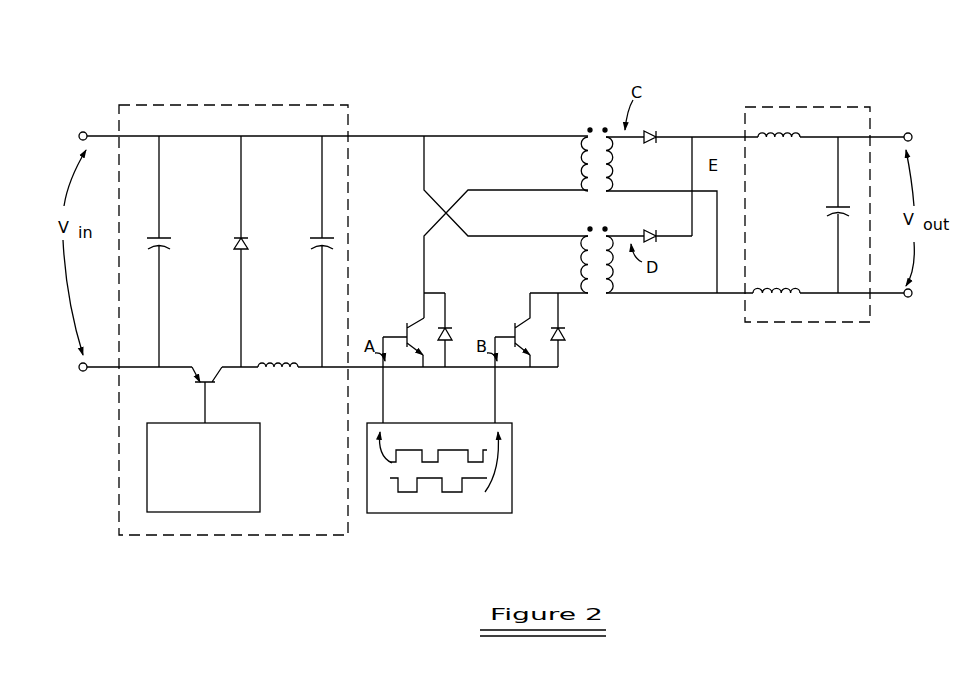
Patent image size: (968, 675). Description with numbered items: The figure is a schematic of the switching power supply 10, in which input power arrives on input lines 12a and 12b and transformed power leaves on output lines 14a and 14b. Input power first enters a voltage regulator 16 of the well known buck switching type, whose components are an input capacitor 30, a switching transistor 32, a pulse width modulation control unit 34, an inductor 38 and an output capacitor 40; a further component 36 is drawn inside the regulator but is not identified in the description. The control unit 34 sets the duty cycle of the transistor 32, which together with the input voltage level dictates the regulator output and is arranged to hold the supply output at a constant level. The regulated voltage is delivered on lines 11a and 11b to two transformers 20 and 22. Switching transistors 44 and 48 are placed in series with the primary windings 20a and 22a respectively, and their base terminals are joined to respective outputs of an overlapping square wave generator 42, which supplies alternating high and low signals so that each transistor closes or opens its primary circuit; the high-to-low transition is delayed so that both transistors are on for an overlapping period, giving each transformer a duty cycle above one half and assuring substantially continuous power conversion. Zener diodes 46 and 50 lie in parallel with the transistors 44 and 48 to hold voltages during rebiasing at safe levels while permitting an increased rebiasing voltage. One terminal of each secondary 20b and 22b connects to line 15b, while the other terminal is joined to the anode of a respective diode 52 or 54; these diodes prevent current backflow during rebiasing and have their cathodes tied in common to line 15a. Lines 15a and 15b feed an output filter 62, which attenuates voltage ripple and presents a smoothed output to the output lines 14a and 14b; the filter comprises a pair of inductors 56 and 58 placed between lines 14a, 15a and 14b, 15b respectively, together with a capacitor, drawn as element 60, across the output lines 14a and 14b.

The switching power supply 10 is at (522, 52).
The output line of voltage regulator 11a is at (378, 133).
The output line of voltage regulator 11b is at (367, 372).
The input line 12a is at (78, 123).
The input line 12b is at (78, 385).
The output line 14a is at (890, 130).
The output line 14b is at (890, 300).
The line 15a is at (732, 130).
The line 15b is at (704, 298).
The voltage regulator 16 is at (201, 104).
The transformer 20 is at (606, 137).
The primary winding 20a is at (561, 164).
The secondary winding 20b is at (618, 178).
The transformer 22 is at (605, 286).
The primary winding 22a is at (561, 264).
The secondary winding 22b is at (612, 276).
The input capacitor 30 is at (165, 236).
The switching transistor 32 is at (198, 377).
The pulse width modulation control unit 34 is at (264, 428).
The freewheeling diode 36 is at (244, 236).
The inductor 38 is at (270, 364).
The output capacitor 40 is at (318, 235).
The overlapping square wave generator 42 is at (516, 494).
The switching transistor 44 is at (401, 324).
The Zener diode 46 is at (449, 328).
The switching transistor 48 is at (511, 323).
The Zener diode 50 is at (566, 346).
The diode 52 is at (648, 126).
The diode 54 is at (649, 226).
The inductor 56 is at (798, 147).
The inductor 58 is at (770, 286).
The output capacitor 60 is at (830, 201).
The output filter 62 is at (801, 106).